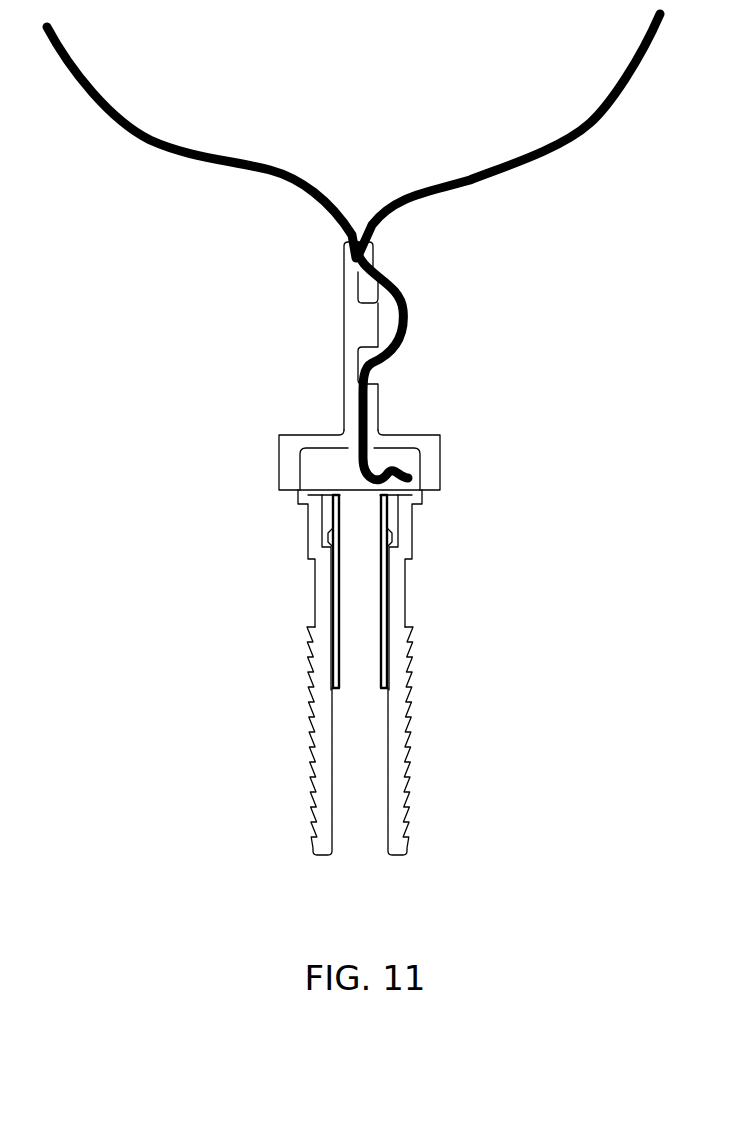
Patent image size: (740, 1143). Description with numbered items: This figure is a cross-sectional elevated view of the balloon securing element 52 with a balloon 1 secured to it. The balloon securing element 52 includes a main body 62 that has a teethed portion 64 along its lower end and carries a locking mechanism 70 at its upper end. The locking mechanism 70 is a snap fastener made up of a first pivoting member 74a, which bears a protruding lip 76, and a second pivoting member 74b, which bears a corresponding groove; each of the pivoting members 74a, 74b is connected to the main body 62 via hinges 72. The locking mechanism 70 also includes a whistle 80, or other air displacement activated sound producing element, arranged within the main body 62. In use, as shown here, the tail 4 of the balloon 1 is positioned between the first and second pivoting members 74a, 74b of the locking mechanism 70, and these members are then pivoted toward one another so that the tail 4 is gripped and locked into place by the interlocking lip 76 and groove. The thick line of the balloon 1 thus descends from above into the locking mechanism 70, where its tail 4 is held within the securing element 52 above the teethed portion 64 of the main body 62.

The balloon 1 is at (597, 117).
The tail 4 is at (371, 462).
The locking mechanism 70 is at (353, 336).
The first pivoting member 74a is at (344, 257).
The second pivoting member 74b is at (373, 250).
The protruding lip 76 is at (378, 313).
The hinges 72 is at (298, 493).
The balloon securing element 52 is at (331, 642).
The main body 62 is at (402, 595).
The whistle 80 is at (404, 517).
The teethed portion 64 is at (402, 743).